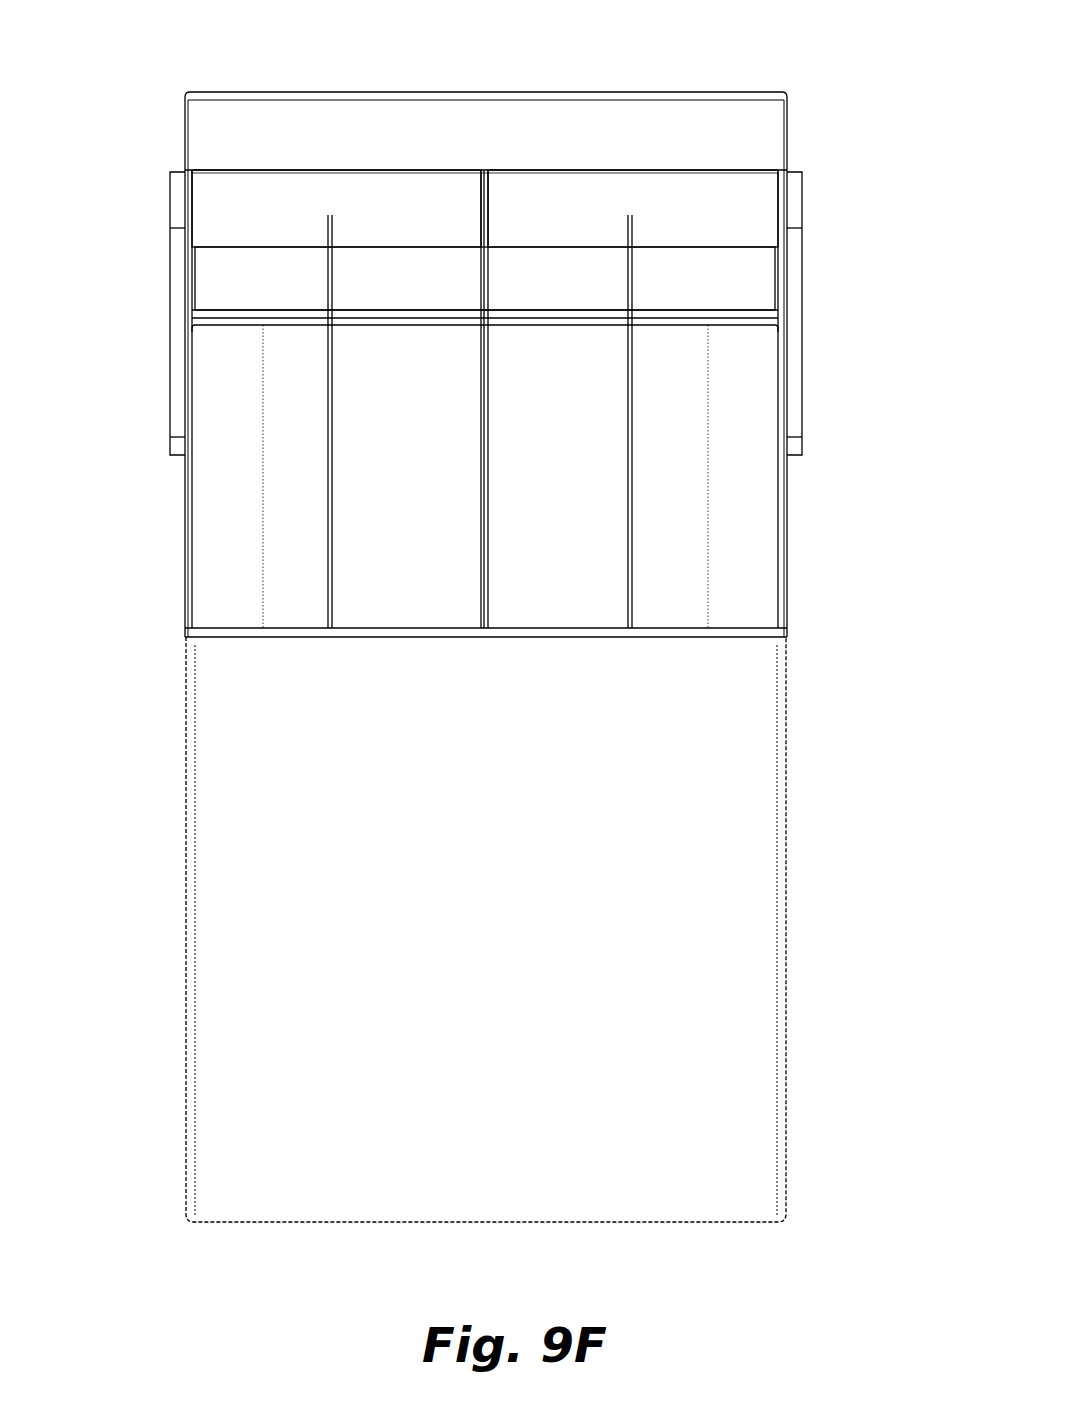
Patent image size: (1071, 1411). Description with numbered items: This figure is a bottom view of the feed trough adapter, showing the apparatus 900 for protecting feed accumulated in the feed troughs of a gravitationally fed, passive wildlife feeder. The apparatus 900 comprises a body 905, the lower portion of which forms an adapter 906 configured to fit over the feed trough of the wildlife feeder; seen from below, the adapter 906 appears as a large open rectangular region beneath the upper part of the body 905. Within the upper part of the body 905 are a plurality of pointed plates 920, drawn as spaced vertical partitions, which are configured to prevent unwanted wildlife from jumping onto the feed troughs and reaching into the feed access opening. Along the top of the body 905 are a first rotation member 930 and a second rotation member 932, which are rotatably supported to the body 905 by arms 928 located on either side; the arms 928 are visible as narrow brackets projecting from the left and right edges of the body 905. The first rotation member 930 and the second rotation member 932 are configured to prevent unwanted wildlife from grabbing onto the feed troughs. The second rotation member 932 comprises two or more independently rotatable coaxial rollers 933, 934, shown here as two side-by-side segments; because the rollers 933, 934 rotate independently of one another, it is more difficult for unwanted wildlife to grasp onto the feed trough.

The apparatus 900 is at (490, 615).
The body 905 is at (565, 653).
The adapter 906 is at (486, 929).
The pointed plates 920 is at (496, 421).
The arms 928 is at (506, 313).
The first rotation member 930 is at (485, 278).
The second rotation member 932 is at (486, 109).
The independently rotatable coaxial roller 933 is at (336, 208).
The independently rotatable coaxial roller 934 is at (633, 208).